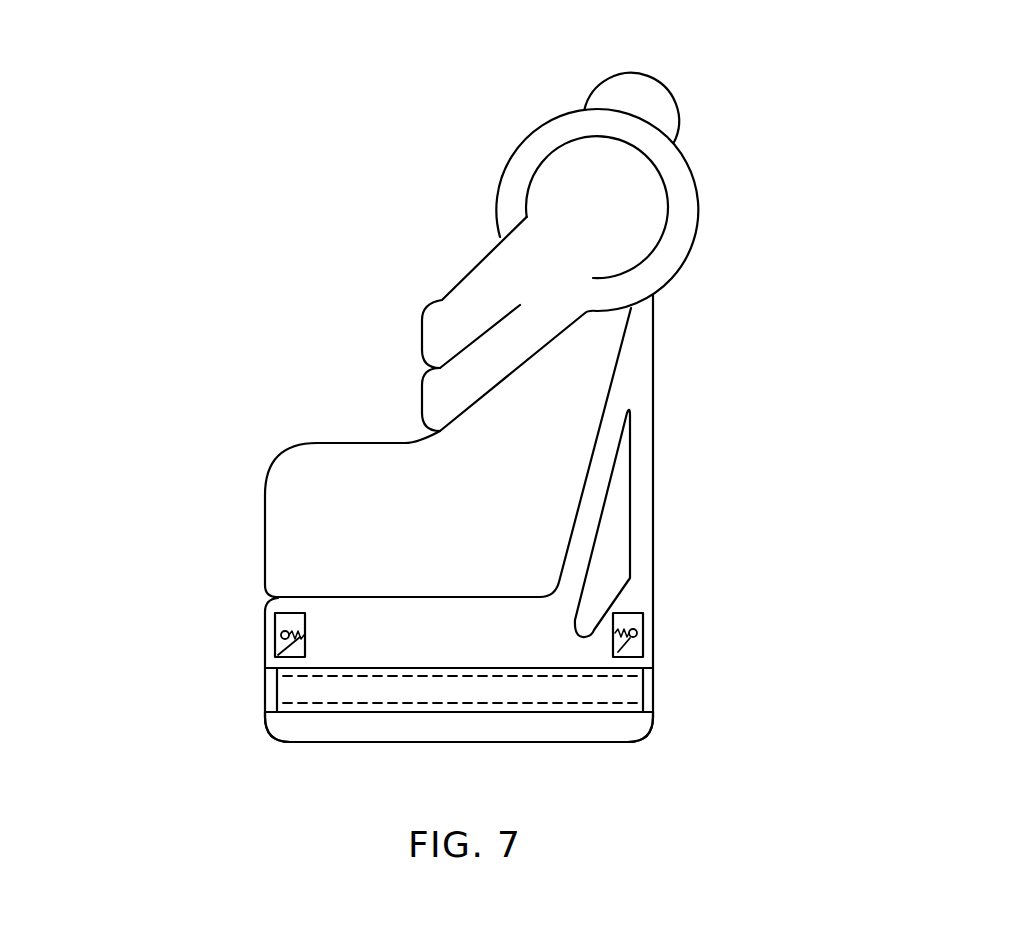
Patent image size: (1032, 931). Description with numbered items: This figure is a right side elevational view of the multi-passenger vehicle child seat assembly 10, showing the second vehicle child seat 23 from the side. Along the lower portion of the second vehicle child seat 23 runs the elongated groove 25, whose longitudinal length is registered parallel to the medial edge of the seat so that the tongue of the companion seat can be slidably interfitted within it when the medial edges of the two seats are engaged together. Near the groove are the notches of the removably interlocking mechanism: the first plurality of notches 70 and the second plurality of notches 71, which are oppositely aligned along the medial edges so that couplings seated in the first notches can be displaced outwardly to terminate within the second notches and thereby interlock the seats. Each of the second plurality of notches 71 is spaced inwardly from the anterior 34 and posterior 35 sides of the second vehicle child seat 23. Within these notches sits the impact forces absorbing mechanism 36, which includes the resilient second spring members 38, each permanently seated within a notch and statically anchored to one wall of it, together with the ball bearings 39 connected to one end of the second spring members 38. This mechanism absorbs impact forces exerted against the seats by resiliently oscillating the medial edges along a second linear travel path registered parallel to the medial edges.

The multi-passenger vehicle child seat assembly 10 is at (967, 128).
The second vehicle child seat 23 is at (243, 449).
The elongated groove 25 is at (448, 690).
The anterior side 34 is at (265, 722).
The posterior side 35 is at (653, 722).
The impact forces absorbing mechanism 36 is at (243, 594).
The resilient second spring members 38 is at (275, 655).
The ball bearings 39 is at (280, 636).
The first plurality of notches 70 is at (290, 622).
The second plurality of notches 71 is at (628, 622).